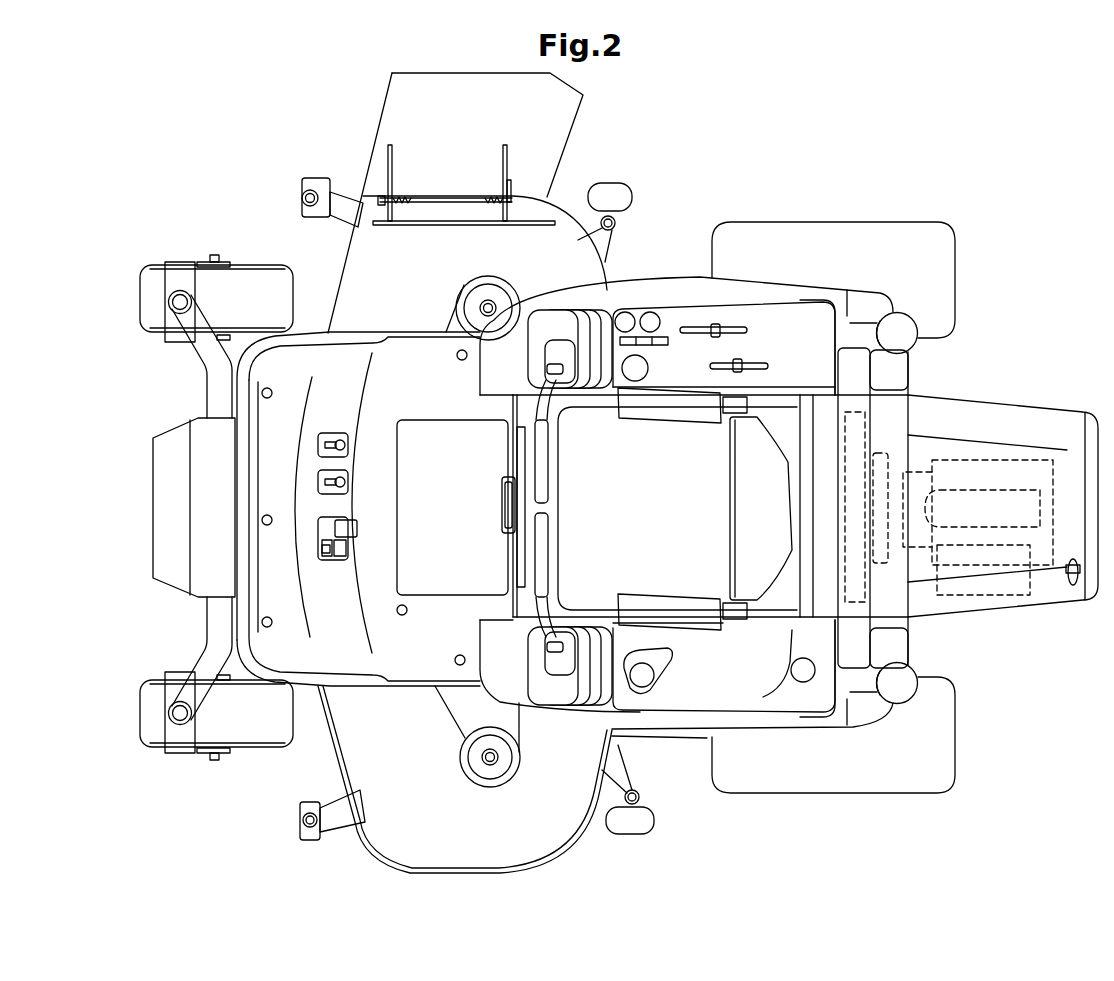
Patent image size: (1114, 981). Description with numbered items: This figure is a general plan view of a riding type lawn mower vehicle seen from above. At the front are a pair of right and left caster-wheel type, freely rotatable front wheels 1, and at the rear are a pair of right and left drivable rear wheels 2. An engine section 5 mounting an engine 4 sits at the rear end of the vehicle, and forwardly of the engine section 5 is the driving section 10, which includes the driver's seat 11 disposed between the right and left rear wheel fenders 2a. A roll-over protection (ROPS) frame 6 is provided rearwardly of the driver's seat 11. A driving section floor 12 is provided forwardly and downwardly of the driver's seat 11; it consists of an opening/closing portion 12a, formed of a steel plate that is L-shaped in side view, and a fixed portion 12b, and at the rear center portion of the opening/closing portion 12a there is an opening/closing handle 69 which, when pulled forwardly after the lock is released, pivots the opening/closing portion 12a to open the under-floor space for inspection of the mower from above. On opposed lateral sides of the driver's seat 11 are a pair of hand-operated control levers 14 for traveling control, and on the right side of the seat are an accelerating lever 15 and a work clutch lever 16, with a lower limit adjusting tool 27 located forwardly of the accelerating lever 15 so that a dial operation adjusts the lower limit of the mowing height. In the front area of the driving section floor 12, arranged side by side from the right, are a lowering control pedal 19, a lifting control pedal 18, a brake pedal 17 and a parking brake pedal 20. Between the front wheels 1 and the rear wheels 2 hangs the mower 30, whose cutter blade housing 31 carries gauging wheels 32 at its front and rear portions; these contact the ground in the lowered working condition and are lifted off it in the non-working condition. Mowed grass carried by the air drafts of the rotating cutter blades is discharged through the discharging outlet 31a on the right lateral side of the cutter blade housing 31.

The front wheels 1 is at (140, 301).
The rear wheels 2 is at (860, 222).
The rear wheel fenders 2a is at (617, 285).
The engine 4 is at (1007, 462).
The engine section 5 is at (993, 624).
The roll-over protection (ROPS) frame 6 is at (812, 510).
The driving section 10 is at (722, 663).
The driver's seat 11 is at (573, 455).
The driving section floor 12 is at (382, 690).
The opening/closing portion 12a is at (404, 362).
The fixed portion 12b is at (428, 588).
The control levers 14 is at (548, 485).
The accelerating lever 15 is at (742, 360).
The work clutch lever 16 is at (716, 326).
The brake pedal 17 is at (357, 530).
The lifting control pedal 18 is at (348, 483).
The lowering control pedal 19 is at (345, 447).
The parking brake pedal 20 is at (325, 560).
The lower limit adjusting tool 27 is at (648, 367).
The mower 30 is at (439, 488).
The cutter blade housing 31 is at (400, 853).
The discharging outlet 31a is at (378, 130).
The gauging wheels 32 is at (300, 199).
The opening/closing handle 69 is at (502, 500).